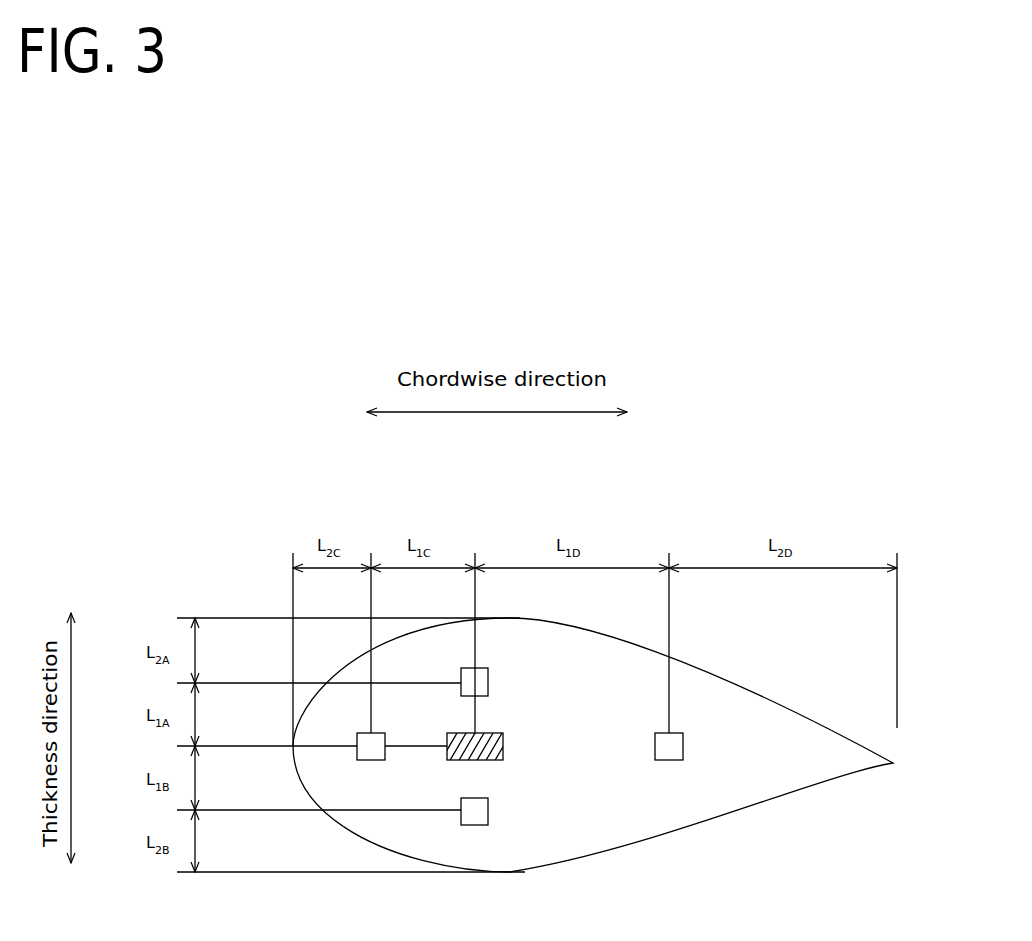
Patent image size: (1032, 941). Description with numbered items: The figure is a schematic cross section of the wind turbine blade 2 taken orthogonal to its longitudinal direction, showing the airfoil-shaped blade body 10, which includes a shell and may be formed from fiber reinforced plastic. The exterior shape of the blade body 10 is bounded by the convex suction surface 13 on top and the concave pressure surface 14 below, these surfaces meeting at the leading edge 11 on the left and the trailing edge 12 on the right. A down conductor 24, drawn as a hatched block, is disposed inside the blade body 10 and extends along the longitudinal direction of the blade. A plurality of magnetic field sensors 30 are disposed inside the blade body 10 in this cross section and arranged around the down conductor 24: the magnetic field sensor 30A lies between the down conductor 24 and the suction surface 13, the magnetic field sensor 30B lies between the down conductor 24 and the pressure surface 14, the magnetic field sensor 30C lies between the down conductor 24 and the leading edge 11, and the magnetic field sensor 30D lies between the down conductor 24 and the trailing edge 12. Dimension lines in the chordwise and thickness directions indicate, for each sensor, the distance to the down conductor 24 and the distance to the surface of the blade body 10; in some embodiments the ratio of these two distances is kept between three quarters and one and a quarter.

The wind turbine blade 2 is at (852, 478).
The blade body 10 is at (710, 818).
The leading edge 11 is at (293, 772).
The trailing edge 12 is at (893, 763).
The suction surface 13 is at (566, 620).
The pressure surface 14 is at (555, 867).
The down conductor 24 is at (503, 741).
The magnetic field sensor 30 is at (541, 789).
The magnetic field sensor 30A is at (488, 683).
The magnetic field sensor 30B is at (475, 825).
The magnetic field sensor 30C is at (370, 760).
The magnetic field sensor 30D is at (669, 760).